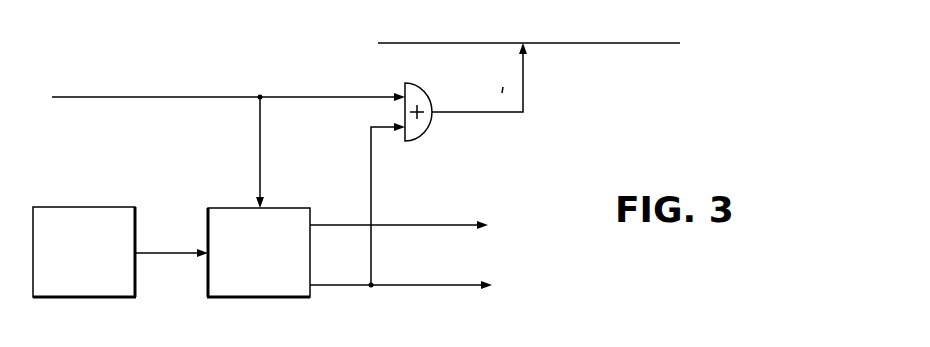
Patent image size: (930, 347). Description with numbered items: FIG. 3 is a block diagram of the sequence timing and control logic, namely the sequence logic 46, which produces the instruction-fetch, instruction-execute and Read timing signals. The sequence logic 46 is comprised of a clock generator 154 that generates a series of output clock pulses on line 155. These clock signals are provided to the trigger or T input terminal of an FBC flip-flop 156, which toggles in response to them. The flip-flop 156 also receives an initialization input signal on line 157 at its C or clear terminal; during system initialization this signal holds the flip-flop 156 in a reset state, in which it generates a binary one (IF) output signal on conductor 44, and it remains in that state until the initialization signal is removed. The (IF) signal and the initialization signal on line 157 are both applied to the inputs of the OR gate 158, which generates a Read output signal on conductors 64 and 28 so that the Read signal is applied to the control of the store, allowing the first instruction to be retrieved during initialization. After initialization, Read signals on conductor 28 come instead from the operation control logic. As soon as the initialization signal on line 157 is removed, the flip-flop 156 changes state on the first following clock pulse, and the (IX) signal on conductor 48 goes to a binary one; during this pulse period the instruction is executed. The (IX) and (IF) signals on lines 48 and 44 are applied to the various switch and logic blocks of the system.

The sequence logic 46 is at (135, 60).
The clock generator 154 is at (118, 206).
The clock line 155 is at (171, 252).
The FBC flip-flop 156 is at (220, 207).
The initialization input line 157 is at (351, 96).
The OR gate 158 is at (413, 84).
The Read output conductor 64 is at (523, 86).
The Read conductor 28 is at (490, 41).
The (IX) conductor 48 is at (455, 225).
The (IF) conductor 44 is at (447, 273).